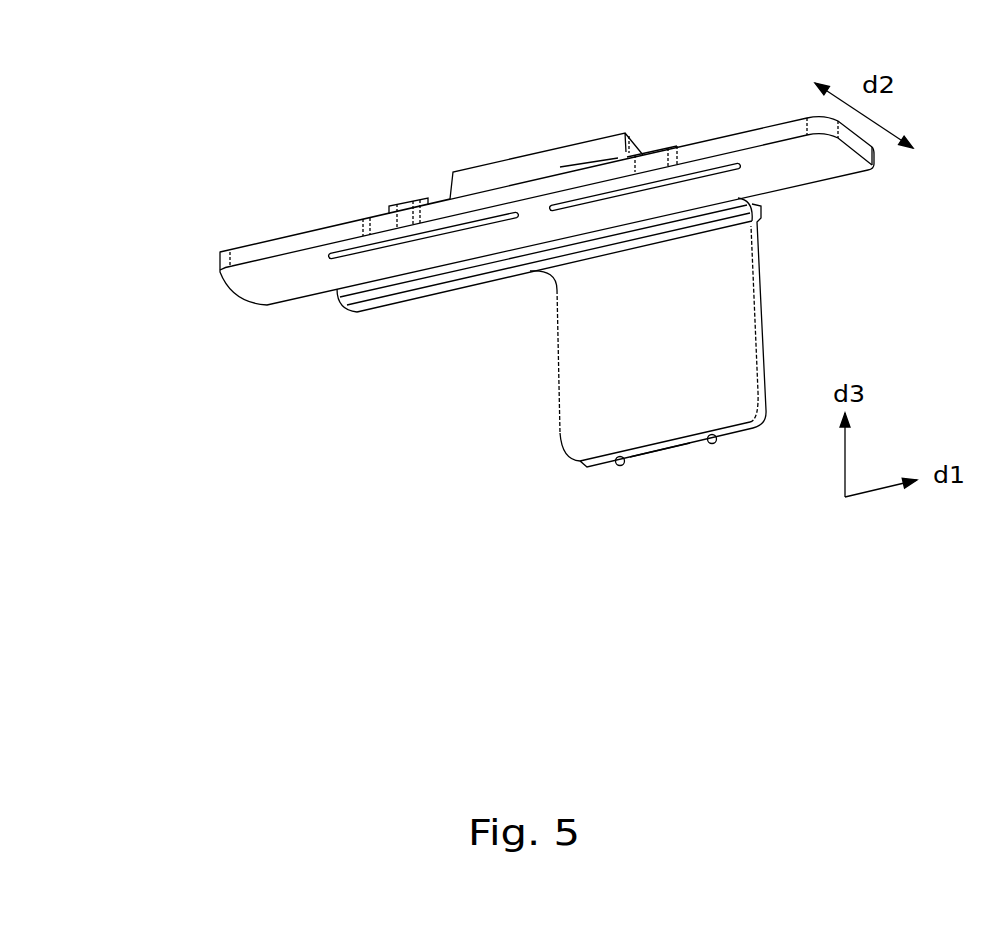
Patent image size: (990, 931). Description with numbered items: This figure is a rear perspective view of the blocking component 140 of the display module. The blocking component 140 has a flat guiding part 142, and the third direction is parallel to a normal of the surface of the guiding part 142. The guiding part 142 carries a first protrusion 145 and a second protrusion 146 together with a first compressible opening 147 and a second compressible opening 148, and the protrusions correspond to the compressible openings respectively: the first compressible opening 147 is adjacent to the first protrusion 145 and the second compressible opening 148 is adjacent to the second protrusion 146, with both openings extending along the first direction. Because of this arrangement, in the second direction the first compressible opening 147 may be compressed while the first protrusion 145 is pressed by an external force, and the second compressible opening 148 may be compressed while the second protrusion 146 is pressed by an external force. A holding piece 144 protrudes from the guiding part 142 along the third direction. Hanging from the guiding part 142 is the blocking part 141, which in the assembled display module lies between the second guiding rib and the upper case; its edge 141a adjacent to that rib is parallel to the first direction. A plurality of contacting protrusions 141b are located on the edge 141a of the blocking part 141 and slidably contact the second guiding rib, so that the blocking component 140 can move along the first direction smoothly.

The blocking component 140 is at (97, 630).
The blocking part 141 is at (573, 377).
The edge 141a is at (661, 450).
The contacting protrusions 141b is at (618, 465).
The guiding part 142 is at (245, 283).
The holding piece 144 is at (536, 165).
The first protrusion 145 is at (389, 205).
The second protrusion 146 is at (650, 162).
The first compressible opening 147 is at (337, 255).
The second compressible opening 148 is at (717, 167).